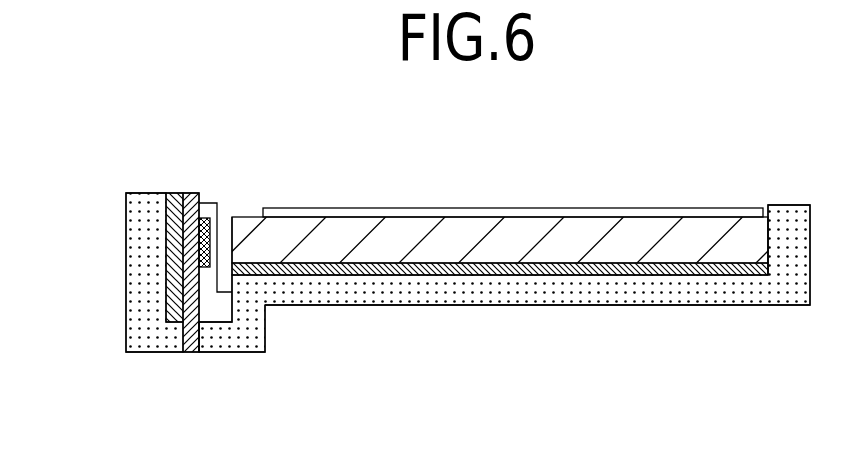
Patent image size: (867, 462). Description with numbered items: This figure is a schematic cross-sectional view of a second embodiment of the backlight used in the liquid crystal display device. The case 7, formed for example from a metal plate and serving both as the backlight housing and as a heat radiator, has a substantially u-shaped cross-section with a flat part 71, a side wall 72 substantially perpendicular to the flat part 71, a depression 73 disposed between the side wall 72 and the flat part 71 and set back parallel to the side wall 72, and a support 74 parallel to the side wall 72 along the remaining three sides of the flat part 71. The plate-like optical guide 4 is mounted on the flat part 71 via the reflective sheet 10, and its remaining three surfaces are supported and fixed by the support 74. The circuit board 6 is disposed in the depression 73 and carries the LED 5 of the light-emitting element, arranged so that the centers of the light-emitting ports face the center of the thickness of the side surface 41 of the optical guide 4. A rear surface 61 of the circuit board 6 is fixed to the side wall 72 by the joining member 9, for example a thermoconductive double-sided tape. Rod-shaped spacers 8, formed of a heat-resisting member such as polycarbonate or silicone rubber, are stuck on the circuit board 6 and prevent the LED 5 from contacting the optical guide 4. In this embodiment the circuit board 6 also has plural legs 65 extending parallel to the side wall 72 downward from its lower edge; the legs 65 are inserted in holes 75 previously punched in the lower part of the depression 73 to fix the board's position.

The optical guide 4 is at (512, 235).
The LED 5 is at (203, 268).
The circuit board 6 is at (187, 203).
The case 7 is at (472, 307).
The spacer 8 is at (227, 311).
The joining member 9 is at (174, 275).
The reflective sheet 10 is at (524, 270).
The side surface of the optical guide 41 is at (225, 228).
The rear surface of the circuit board 61 is at (177, 343).
The legs 65 is at (191, 347).
The flat part 71 is at (638, 292).
The side wall 72 is at (148, 205).
The depression 73 is at (246, 300).
The support 74 is at (658, 210).
The holes 75 is at (199, 345).